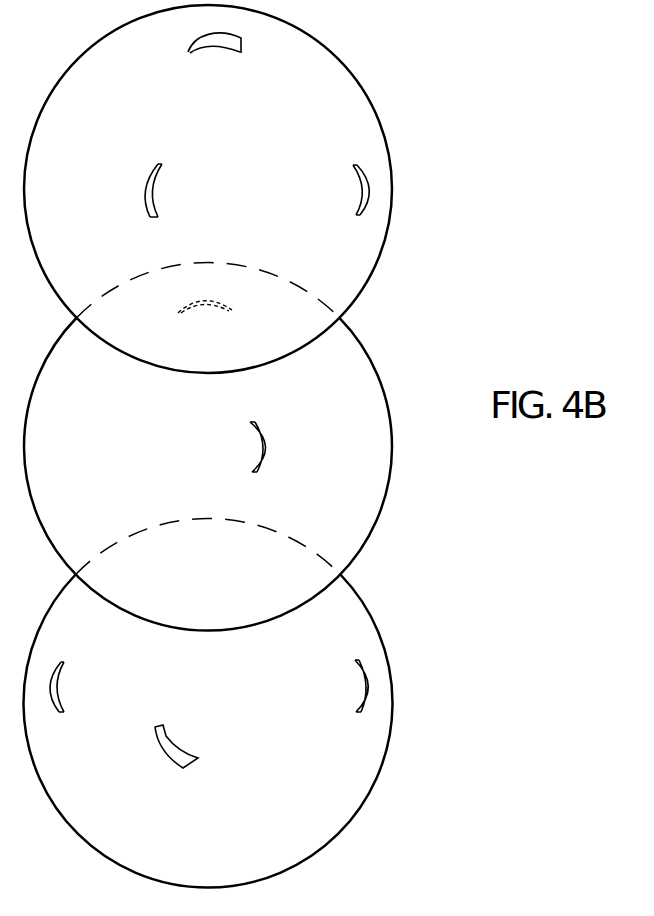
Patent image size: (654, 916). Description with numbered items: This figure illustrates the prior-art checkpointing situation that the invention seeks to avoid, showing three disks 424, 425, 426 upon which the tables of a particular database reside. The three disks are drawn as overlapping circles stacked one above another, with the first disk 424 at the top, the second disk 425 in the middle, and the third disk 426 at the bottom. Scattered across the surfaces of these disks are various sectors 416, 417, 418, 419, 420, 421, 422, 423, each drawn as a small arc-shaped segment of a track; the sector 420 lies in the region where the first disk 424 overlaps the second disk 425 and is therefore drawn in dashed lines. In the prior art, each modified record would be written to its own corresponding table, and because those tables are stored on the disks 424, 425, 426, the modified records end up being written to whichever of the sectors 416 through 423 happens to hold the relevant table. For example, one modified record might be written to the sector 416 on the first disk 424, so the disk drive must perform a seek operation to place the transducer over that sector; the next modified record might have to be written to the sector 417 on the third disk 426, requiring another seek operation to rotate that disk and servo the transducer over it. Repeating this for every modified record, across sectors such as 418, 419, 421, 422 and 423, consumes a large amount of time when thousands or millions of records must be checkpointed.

The sector 416 is at (243, 51).
The sector 417 is at (181, 750).
The sector 418 is at (268, 452).
The sector 419 is at (151, 182).
The sector 420 is at (234, 308).
The sector 421 is at (62, 680).
The sector 422 is at (366, 183).
The sector 423 is at (368, 682).
The disk 424 is at (223, 134).
The disk 425 is at (227, 440).
The disk 426 is at (221, 703).